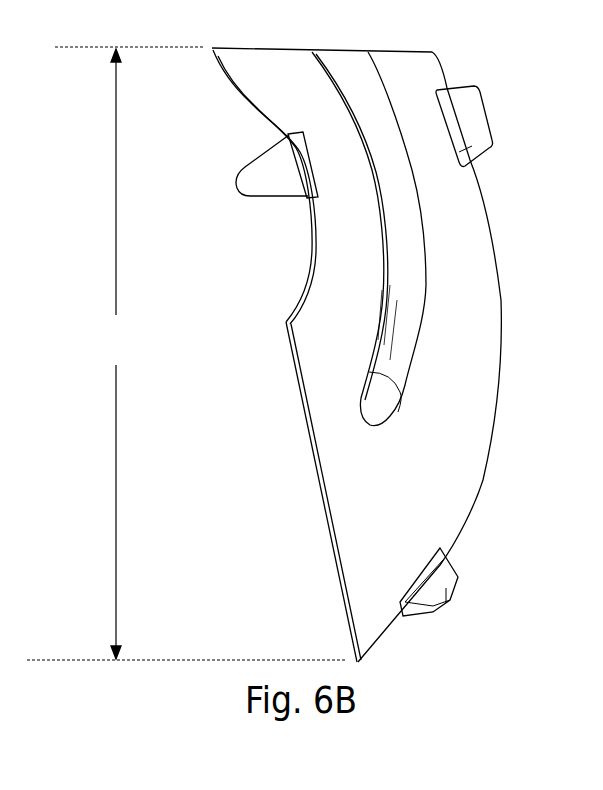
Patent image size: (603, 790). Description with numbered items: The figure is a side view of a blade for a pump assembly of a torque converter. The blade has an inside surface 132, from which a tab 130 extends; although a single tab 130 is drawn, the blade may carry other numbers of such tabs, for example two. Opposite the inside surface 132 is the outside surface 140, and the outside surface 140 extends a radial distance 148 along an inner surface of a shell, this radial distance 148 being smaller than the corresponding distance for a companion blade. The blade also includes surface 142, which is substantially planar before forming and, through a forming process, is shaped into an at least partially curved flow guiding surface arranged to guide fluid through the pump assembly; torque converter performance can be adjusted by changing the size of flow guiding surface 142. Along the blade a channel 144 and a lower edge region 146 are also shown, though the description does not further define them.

The tab 130 is at (246, 195).
The inside surface 132 is at (300, 273).
The outside surface 140 is at (495, 238).
The surface 142 is at (432, 456).
The channel 144 is at (378, 107).
The lower edge rib 146 is at (300, 423).
The radial distance 148 is at (186, 353).